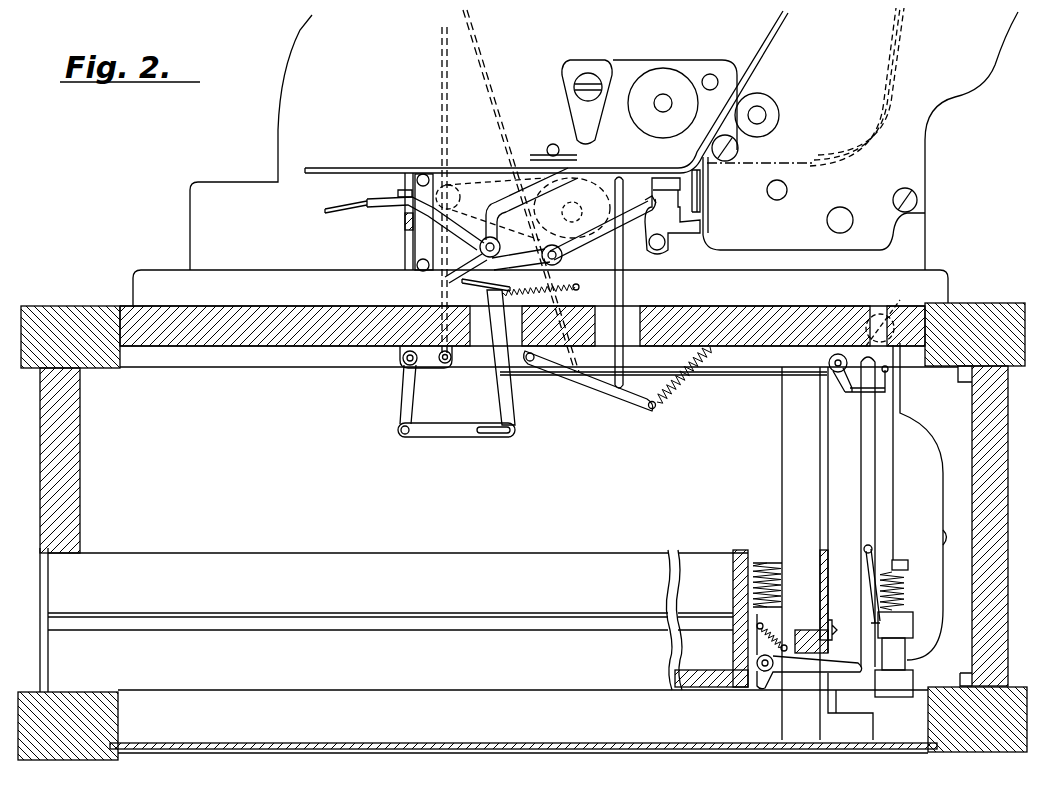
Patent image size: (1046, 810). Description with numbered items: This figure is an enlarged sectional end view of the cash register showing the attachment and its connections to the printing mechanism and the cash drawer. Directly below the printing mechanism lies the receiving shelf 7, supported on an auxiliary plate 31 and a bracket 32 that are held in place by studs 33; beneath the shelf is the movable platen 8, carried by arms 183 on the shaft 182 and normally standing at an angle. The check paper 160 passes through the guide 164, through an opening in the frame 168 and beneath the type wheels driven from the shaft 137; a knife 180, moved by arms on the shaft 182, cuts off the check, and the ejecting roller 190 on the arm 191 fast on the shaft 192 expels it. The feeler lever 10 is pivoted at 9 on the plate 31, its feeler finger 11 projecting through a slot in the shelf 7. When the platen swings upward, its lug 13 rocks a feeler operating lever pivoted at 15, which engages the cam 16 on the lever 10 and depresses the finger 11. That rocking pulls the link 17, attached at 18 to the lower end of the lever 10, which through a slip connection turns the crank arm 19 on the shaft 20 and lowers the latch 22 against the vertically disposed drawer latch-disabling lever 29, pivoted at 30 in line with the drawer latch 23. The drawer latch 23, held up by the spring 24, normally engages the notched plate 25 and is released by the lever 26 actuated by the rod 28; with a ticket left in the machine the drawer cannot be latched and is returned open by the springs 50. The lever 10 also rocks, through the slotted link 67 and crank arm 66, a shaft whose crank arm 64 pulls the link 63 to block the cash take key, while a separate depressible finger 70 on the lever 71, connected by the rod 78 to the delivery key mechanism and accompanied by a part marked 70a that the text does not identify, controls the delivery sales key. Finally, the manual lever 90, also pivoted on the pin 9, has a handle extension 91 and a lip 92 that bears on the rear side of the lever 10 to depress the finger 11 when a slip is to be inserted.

The receiving shelf 7 is at (470, 172).
The movable platen 8 is at (672, 256).
The pivot pin 9 is at (445, 280).
The feeler lever 10 is at (498, 220).
The feeler finger 11 is at (553, 144).
The lug 13 is at (640, 232).
The pivot 15 is at (562, 258).
The cam 16 is at (506, 285).
The link 17 is at (736, 377).
The attachment point 18 is at (507, 385).
The crank arm 19 is at (845, 388).
The shaft 20 is at (828, 365).
The latch 22 is at (916, 292).
The drawer latch 23 is at (840, 690).
The spring 24 is at (779, 625).
The notched plate 25 is at (818, 668).
The lever 26 is at (832, 624).
The rod 28 is at (905, 620).
The drawer latch-disabling lever 29 is at (875, 507).
The pivot point 30 is at (878, 548).
The auxiliary plate 31 is at (405, 250).
The bracket 32 is at (398, 193).
The studs 33 is at (420, 186).
The springs 50 is at (776, 560).
The link 63 is at (441, 100).
The crank arm 64 is at (433, 366).
The second crank arm 66 is at (408, 410).
The slotted link 67 is at (436, 437).
The depressible finger 70 is at (623, 291).
The spring 70a is at (685, 385).
The lever 71 is at (612, 398).
The link or rod 78 is at (490, 100).
The lever 90 is at (398, 212).
The handle extension 91 is at (326, 209).
The lip 92 is at (501, 247).
The shaft 137 is at (662, 94).
The check paper 160 is at (792, 162).
The guide 164 is at (816, 198).
The frame 168 is at (706, 188).
The knife 180 is at (703, 212).
The shaft 182 is at (840, 207).
The arms 183 is at (710, 247).
The roller 190 is at (580, 176).
The arm 191 is at (527, 197).
The shaft 192 is at (437, 180).